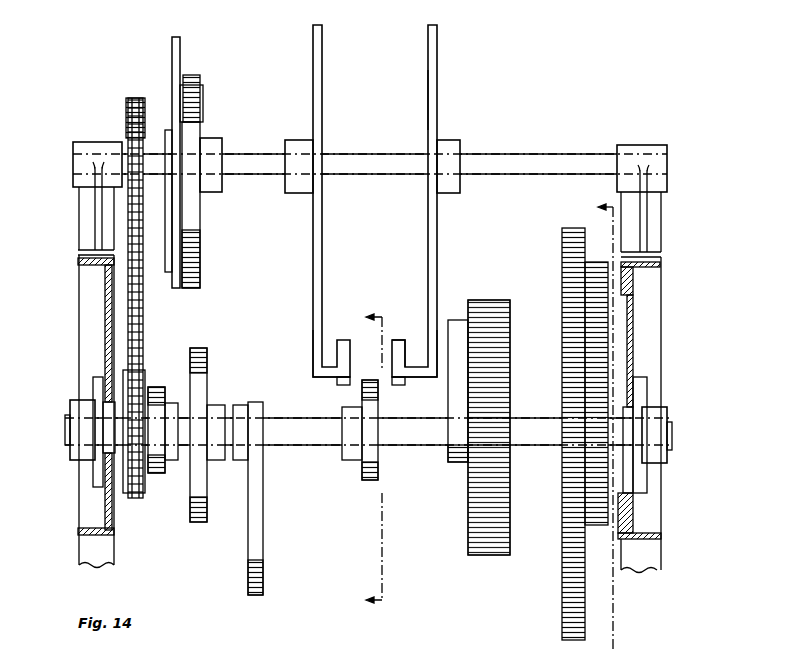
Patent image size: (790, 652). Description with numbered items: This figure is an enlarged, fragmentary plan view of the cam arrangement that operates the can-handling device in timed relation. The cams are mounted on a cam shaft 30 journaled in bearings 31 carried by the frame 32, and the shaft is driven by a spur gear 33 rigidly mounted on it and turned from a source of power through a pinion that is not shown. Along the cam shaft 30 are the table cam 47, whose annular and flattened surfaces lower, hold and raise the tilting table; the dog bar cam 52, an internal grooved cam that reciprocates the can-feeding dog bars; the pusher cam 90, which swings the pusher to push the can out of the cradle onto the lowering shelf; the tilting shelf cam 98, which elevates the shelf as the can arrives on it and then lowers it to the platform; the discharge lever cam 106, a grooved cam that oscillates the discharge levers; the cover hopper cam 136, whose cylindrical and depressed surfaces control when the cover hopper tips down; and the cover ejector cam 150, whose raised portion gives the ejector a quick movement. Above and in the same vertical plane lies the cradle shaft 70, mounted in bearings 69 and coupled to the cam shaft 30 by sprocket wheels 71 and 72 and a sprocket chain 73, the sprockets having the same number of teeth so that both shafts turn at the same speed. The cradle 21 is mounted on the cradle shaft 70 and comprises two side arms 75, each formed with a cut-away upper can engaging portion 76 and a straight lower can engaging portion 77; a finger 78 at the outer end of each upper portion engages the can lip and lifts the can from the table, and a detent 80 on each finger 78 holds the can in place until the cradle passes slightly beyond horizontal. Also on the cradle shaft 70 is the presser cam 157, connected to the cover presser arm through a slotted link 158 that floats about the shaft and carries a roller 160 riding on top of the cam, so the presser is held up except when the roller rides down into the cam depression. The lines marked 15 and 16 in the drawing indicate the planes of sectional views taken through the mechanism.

The slotted link 158 is at (172, 70).
The roller 160 is at (203, 98).
The sprocket wheel 71 is at (128, 116).
The cradle shaft 70 is at (263, 168).
The lower can engaging portions 77 is at (313, 80).
The cradle 21 is at (437, 108).
The side arms 75 is at (318, 158).
The bearings 69 is at (82, 204).
The section line 15 is at (602, 418).
The frame 32 is at (105, 310).
The sprocket chain 73 is at (143, 318).
The sprocket wheel 72 is at (143, 373).
The cover ejector cam 150 is at (182, 373).
The cover hopper cam 136 is at (207, 383).
The presser cam 157 is at (198, 270).
The bearings 31 is at (72, 452).
The cam shaft 30 is at (322, 440).
The table cam 47 is at (366, 483).
The tilting shelf cam 98 is at (456, 466).
The dog bar cam 52 is at (510, 532).
The discharge lever cam 106 is at (600, 527).
The spur gear 33 is at (562, 598).
The upper can engaging portions 76 is at (313, 340).
The finger 78 is at (340, 384).
The detent 80 is at (410, 355).
The section line 16 is at (380, 460).
The pusher cam 90 is at (263, 565).